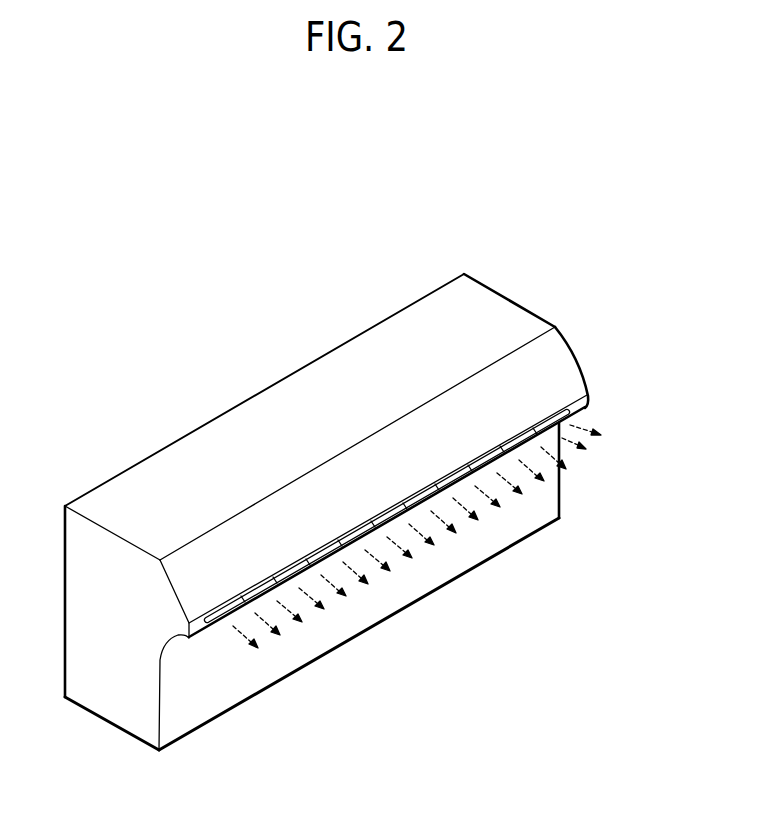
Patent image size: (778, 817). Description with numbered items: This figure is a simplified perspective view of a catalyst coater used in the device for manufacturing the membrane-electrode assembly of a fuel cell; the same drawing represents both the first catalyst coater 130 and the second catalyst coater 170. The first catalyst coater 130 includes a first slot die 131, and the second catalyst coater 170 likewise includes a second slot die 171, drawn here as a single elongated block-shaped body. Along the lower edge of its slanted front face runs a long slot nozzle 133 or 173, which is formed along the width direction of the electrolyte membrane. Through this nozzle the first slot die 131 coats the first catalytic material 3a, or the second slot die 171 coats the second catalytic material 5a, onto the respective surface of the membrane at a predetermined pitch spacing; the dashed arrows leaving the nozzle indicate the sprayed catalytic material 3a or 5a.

The first catalyst coater 130 is at (368, 470).
The second catalyst coater 170 is at (367, 218).
The first slot die 131 is at (326, 512).
The second slot die 171 is at (278, 407).
The slot nozzle 133 is at (386, 555).
The slot nozzle 173 is at (293, 578).
The first catalytic material 3a is at (452, 536).
The second catalytic material 5a is at (533, 448).